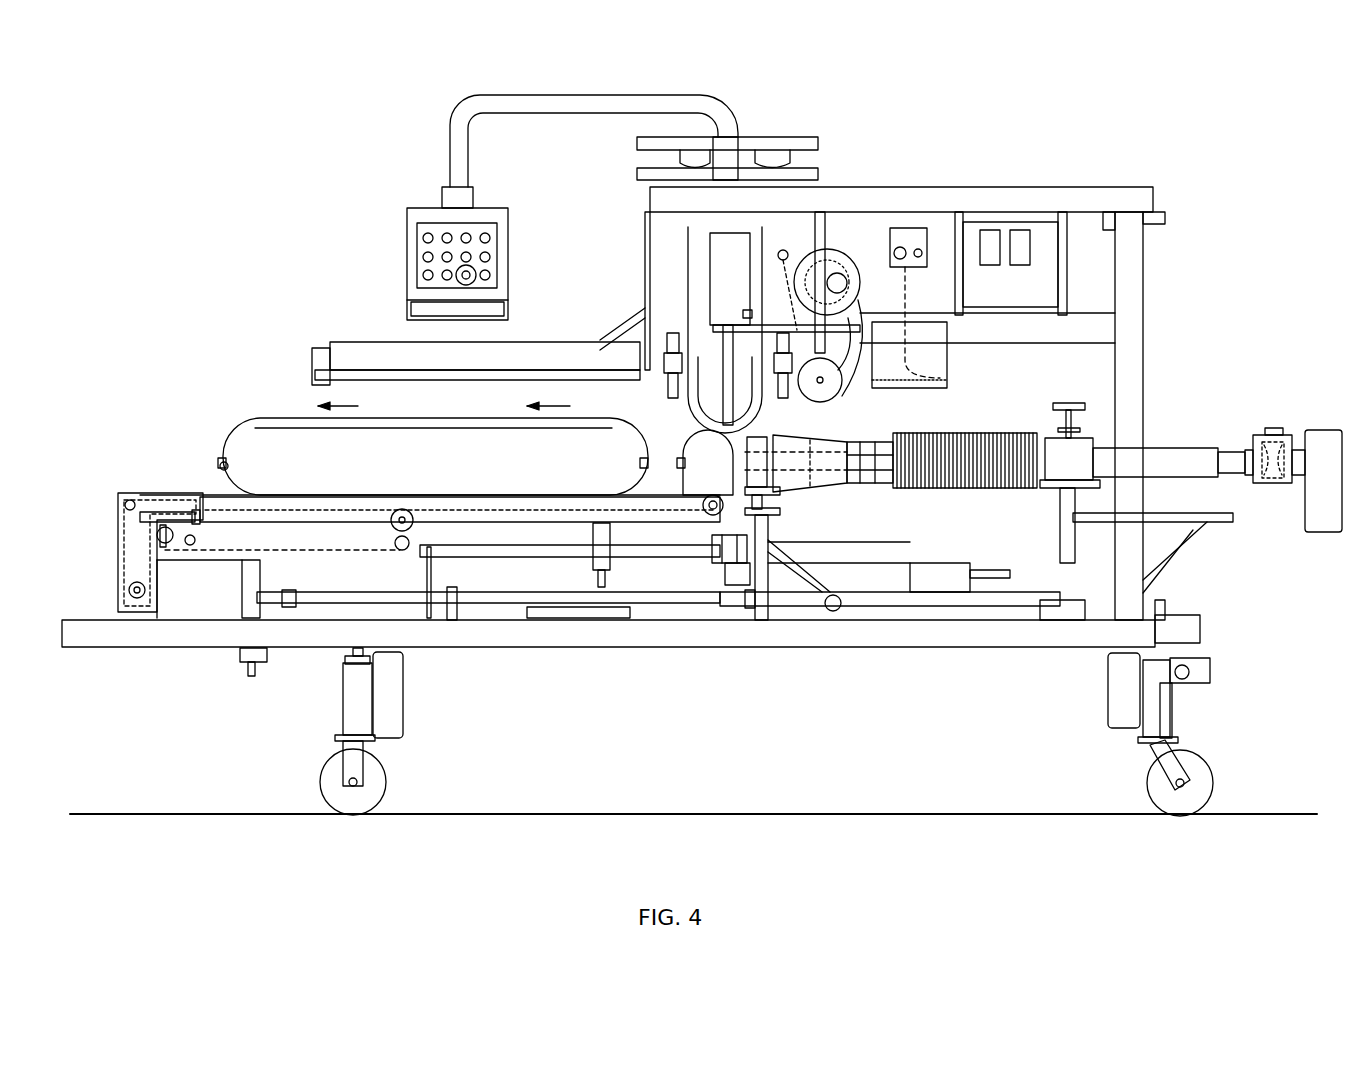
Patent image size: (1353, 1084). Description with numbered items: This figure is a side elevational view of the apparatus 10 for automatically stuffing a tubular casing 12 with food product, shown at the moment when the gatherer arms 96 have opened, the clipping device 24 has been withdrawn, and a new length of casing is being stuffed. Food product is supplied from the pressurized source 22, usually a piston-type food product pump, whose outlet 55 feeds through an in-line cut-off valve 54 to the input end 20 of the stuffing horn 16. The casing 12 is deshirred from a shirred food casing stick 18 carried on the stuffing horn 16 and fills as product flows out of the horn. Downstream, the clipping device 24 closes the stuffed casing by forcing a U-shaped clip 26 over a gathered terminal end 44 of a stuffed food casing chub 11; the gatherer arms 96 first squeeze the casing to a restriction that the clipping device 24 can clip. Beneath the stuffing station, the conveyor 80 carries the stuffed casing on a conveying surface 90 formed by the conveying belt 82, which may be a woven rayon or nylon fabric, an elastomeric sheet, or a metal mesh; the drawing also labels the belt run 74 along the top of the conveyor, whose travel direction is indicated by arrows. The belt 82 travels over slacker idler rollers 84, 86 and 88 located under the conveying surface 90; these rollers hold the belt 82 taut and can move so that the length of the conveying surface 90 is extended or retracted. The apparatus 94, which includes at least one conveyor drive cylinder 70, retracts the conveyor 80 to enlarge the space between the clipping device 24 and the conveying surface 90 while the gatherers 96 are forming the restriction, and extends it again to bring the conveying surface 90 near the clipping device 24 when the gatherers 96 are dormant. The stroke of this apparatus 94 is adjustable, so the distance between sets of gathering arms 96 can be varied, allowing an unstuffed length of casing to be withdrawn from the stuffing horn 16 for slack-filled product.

The apparatus 10 is at (1210, 212).
The stuffed food casing chub 11 is at (436, 470).
The tubular casing 12 is at (232, 440).
The stuffing horn 16 is at (818, 462).
The shirred food casing stick 18 is at (965, 438).
The input end 20 is at (1243, 450).
The pressurized source 22 is at (1320, 430).
The clipping device 24 is at (857, 404).
The clip 26 is at (218, 460).
The terminal end 44 is at (222, 466).
The cut-off valve 54 is at (1258, 435).
The outlet 55 is at (1300, 485).
The conveyor drive cylinder 70 is at (831, 558).
The conveyor belt 74 is at (492, 416).
The conveyor 80 is at (128, 482).
The conveying belt 82 is at (200, 498).
The slacker idler roller 84 is at (400, 518).
The slacker idler roller 86 is at (399, 548).
The slacker idler roller 88 is at (707, 520).
The conveying surface 90 is at (680, 497).
The apparatus 94 is at (603, 560).
The gatherer arms 96 is at (735, 478).